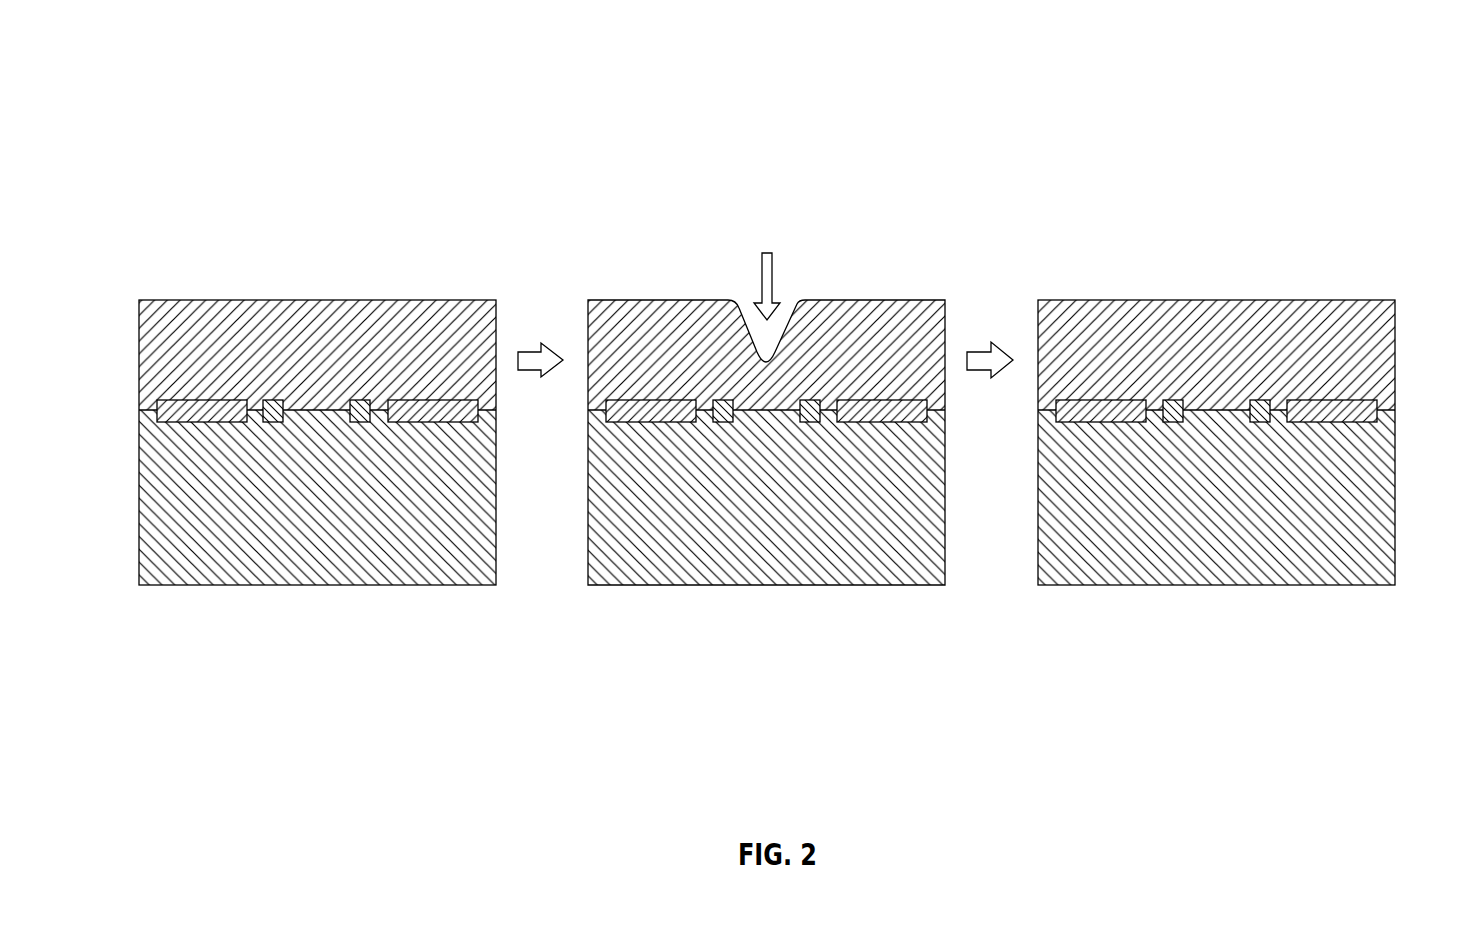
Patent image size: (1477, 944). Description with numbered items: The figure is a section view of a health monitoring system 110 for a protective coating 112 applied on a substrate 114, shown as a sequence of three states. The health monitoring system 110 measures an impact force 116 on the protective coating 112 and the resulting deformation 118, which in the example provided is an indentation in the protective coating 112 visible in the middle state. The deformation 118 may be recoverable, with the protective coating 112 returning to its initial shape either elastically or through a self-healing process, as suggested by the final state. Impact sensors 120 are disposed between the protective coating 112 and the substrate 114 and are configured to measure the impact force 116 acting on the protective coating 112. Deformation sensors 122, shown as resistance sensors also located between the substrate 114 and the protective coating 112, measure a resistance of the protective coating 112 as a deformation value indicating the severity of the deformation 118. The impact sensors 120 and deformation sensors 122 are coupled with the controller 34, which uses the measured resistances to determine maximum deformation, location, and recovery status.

The health monitoring system 110 is at (205, 66).
The protective coating 112 is at (167, 299).
The substrate 114 is at (167, 586).
The impact force 116 is at (767, 252).
The deformation 118 is at (745, 296).
The impact sensors 120 is at (192, 422).
The deformation sensors 122 is at (272, 400).
The controller 34 is at (229, 422).